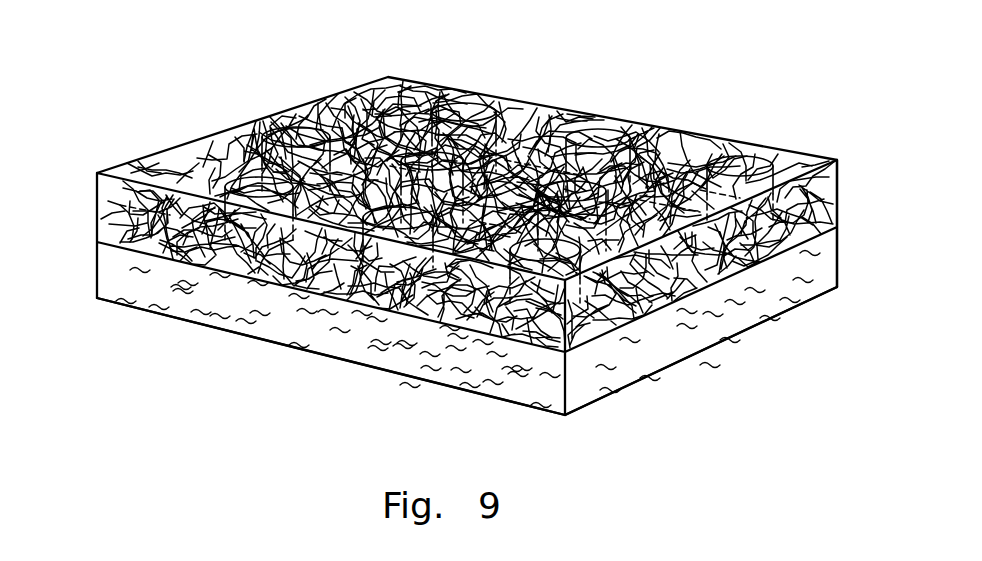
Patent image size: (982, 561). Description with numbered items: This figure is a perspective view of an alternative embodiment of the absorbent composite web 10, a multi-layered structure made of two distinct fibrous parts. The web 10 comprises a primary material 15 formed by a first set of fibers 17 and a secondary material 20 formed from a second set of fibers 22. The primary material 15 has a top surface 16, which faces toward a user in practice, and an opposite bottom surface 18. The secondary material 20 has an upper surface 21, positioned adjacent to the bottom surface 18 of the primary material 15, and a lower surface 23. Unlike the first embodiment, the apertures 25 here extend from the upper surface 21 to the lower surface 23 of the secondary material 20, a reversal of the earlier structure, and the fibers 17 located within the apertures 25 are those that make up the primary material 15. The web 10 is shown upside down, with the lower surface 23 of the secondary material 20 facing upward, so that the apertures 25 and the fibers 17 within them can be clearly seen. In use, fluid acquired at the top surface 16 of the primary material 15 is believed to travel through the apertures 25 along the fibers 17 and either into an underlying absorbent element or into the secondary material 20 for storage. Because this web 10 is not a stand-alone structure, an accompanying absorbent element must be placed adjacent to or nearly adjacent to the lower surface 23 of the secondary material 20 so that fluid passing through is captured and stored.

The absorbent composite web 10 is at (760, 79).
The primary material 15 is at (273, 332).
The top surface 16 is at (167, 317).
The first set of fibers 17 is at (278, 114).
The bottom surface 18 is at (447, 312).
The secondary material 20 is at (163, 157).
The upper surface 21 is at (822, 255).
The second set of fibers 22 is at (100, 222).
The lower surface 23 is at (540, 112).
The apertures 25 is at (302, 132).